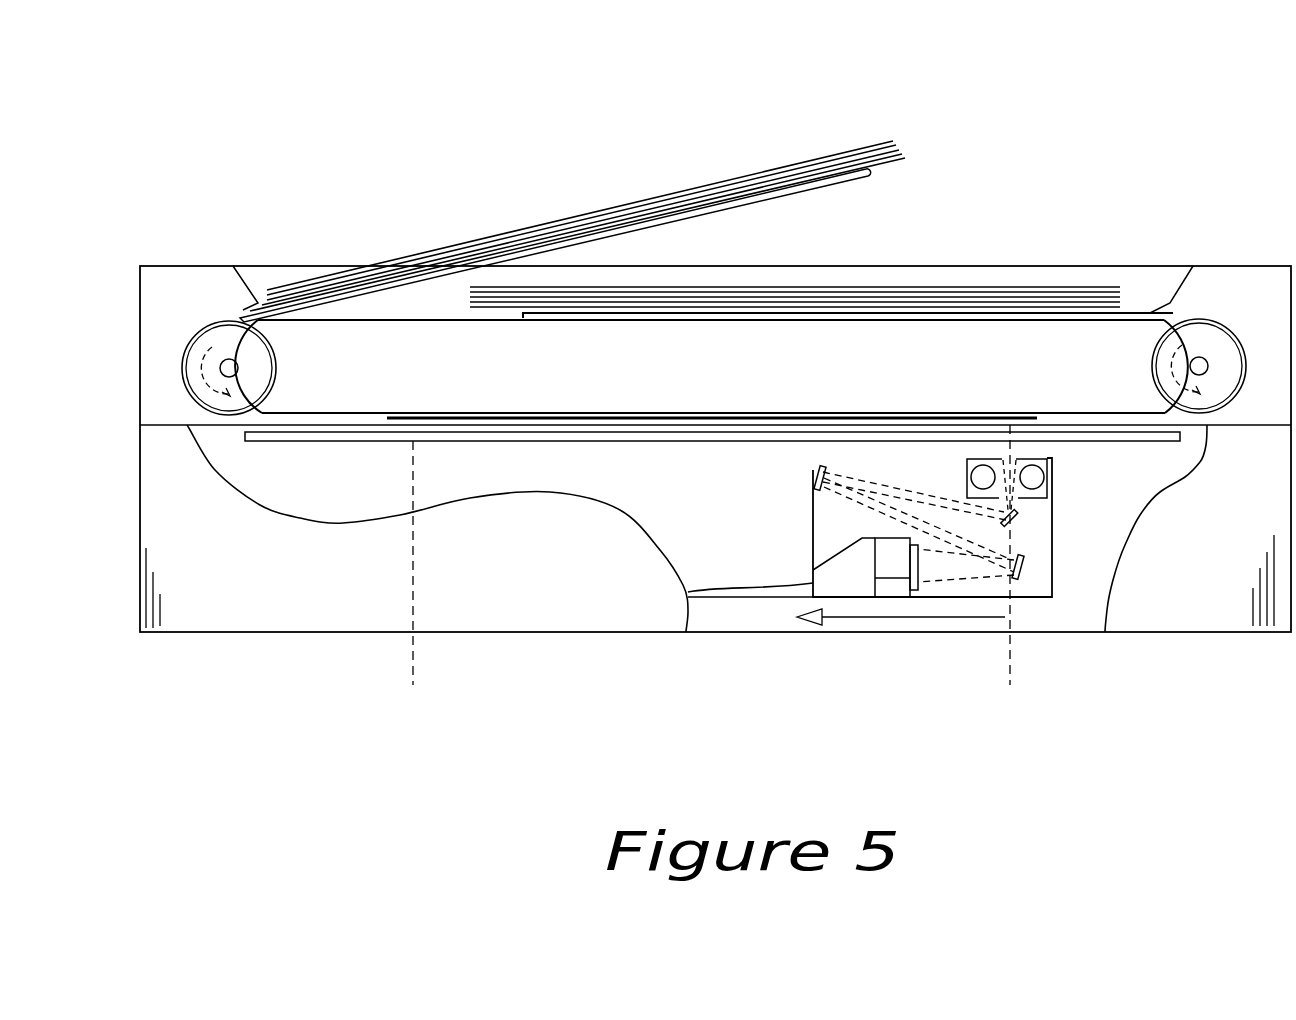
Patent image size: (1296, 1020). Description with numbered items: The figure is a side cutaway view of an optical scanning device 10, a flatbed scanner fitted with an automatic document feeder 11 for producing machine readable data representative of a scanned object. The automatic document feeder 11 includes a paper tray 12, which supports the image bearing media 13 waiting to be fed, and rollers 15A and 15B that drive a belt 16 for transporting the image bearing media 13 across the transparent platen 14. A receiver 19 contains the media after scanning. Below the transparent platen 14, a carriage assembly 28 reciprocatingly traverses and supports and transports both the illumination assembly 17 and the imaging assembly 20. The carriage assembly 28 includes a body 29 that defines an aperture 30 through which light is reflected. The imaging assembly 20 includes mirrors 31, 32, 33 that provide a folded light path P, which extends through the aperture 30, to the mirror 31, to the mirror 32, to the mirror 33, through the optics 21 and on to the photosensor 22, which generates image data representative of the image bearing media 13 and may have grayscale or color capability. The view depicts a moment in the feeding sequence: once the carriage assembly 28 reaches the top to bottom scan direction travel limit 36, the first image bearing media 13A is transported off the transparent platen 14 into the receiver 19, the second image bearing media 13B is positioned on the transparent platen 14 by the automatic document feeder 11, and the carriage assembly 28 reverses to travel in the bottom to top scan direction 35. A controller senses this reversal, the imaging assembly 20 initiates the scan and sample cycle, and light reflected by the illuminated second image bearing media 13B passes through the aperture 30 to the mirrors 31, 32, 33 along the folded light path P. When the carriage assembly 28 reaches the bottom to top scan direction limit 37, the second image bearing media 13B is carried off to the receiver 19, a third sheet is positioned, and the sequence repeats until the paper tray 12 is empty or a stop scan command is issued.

The optical scanning device 10 is at (1097, 116).
The automatic document feeder 11 is at (339, 238).
The paper tray 12 is at (834, 183).
The image bearing media 13 is at (800, 165).
The first image bearing media 13A is at (979, 288).
The second image bearing media 13B is at (462, 416).
The transparent platen 14 is at (688, 432).
The roller 15A is at (200, 335).
The roller 15B is at (1232, 333).
The belt 16 is at (358, 322).
The illumination assembly 17 is at (1048, 483).
The receiver 19 is at (1152, 312).
The imaging assembly 20 is at (1086, 501).
The optics 21 is at (924, 582).
The photosensor 22 is at (835, 562).
The carriage assembly 28 is at (796, 513).
The body 29 is at (1048, 456).
The aperture 30 is at (1003, 457).
The mirror 31 is at (1020, 521).
The mirror 32 is at (810, 476).
The mirror 33 is at (1025, 567).
The bottom to top scan direction 35 is at (869, 620).
The top to bottom scan direction travel limit 36 is at (1010, 652).
The bottom to top scan direction limit 37 is at (413, 652).
The folded light path P is at (866, 478).